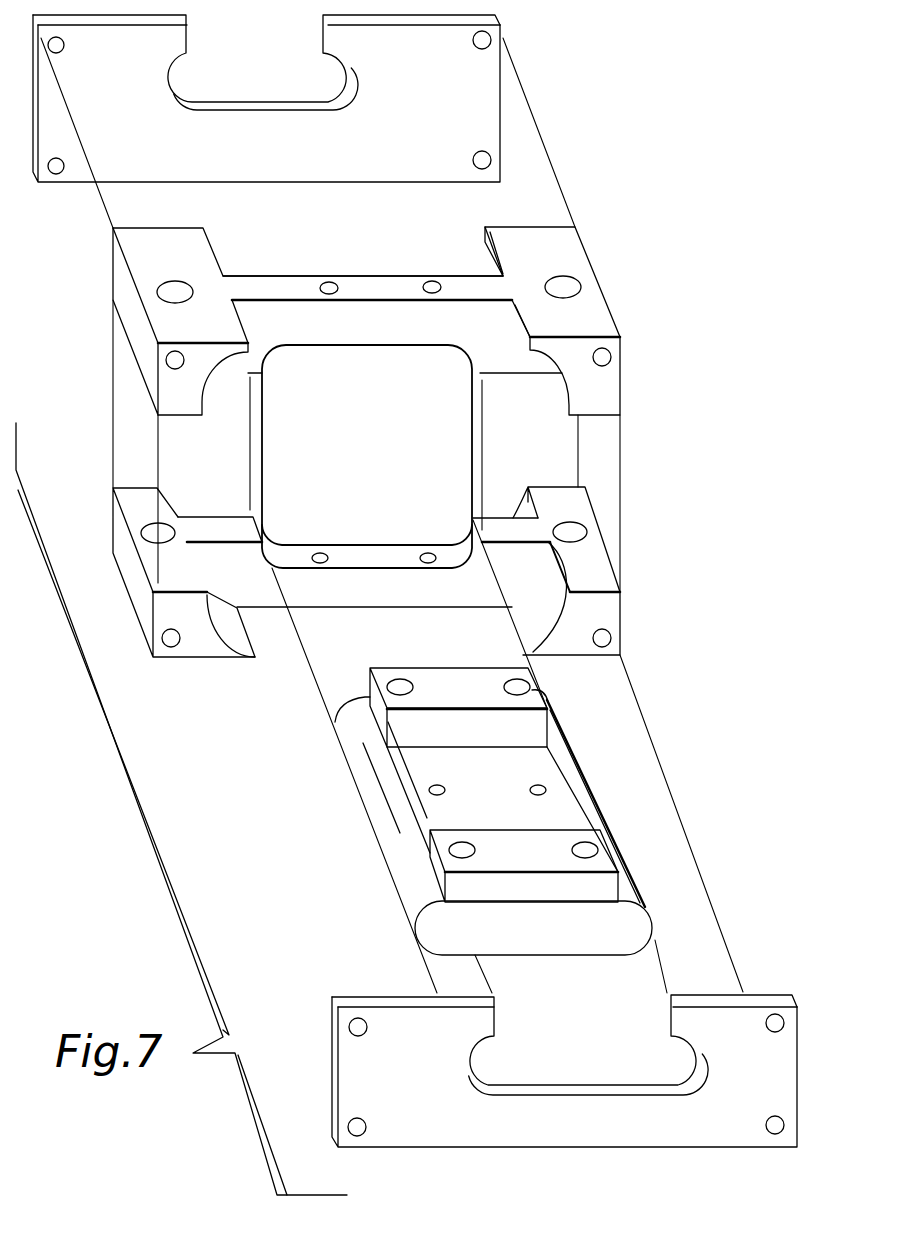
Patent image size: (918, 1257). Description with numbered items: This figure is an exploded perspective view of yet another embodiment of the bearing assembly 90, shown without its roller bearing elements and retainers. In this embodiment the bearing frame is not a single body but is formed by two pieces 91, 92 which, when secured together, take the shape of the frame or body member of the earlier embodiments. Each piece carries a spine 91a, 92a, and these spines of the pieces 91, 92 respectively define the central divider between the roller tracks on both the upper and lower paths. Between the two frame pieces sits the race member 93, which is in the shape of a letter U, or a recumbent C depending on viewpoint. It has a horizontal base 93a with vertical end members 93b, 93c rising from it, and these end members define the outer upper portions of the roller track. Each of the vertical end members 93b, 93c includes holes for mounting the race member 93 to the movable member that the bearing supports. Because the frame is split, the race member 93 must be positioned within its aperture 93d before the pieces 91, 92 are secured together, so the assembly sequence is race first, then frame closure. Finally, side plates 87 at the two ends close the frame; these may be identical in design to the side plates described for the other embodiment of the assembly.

The side plate 87 is at (429, 116).
The bearing assembly 90 is at (693, 493).
The frame piece 91 is at (590, 323).
The spine of frame piece 91a is at (387, 330).
The frame piece 92 is at (602, 617).
The spine of frame piece 92a is at (388, 597).
The race member 93 is at (607, 810).
The horizontal base 93a is at (390, 838).
The vertical end member 93b is at (542, 693).
The vertical end member 93c is at (603, 863).
The aperture 93d is at (345, 389).